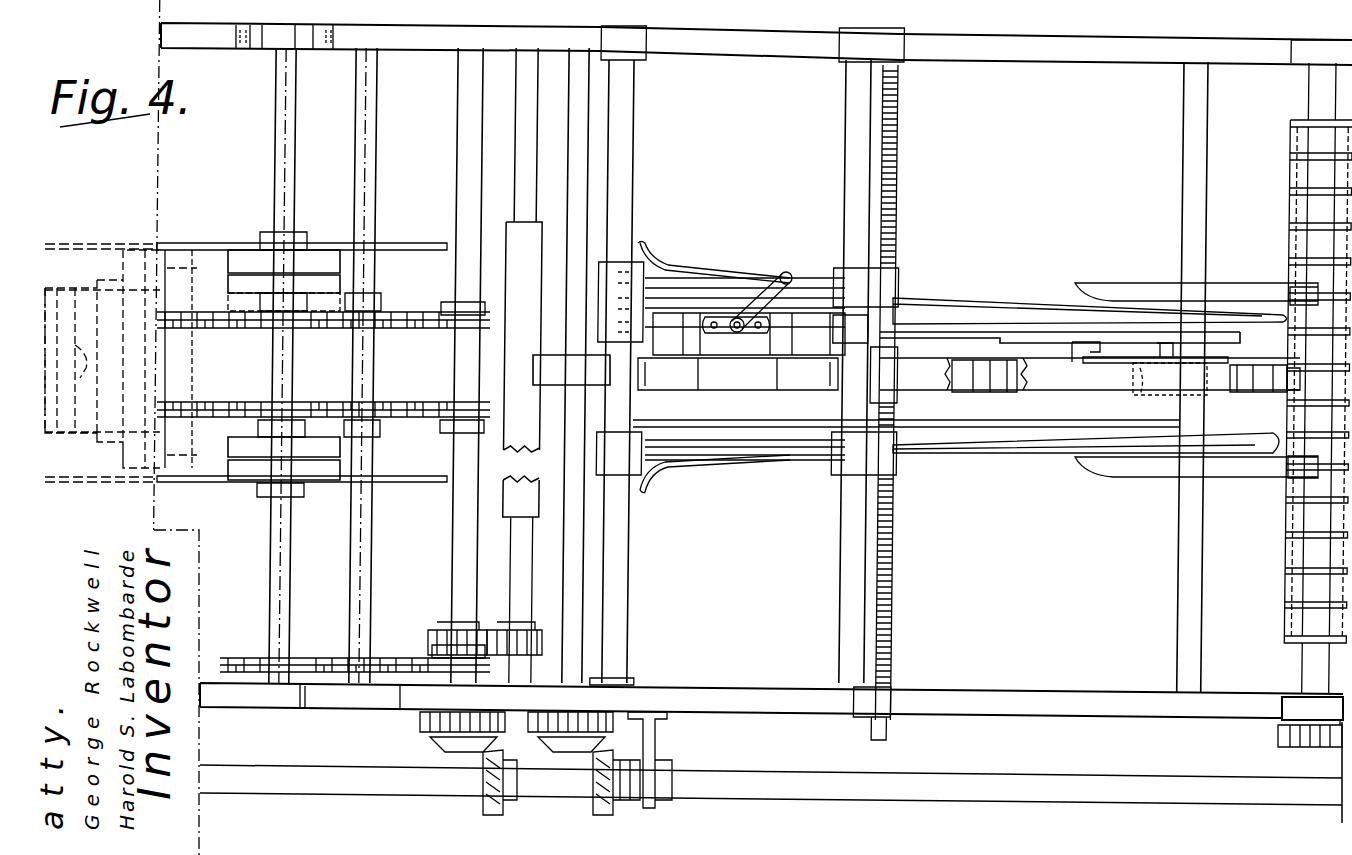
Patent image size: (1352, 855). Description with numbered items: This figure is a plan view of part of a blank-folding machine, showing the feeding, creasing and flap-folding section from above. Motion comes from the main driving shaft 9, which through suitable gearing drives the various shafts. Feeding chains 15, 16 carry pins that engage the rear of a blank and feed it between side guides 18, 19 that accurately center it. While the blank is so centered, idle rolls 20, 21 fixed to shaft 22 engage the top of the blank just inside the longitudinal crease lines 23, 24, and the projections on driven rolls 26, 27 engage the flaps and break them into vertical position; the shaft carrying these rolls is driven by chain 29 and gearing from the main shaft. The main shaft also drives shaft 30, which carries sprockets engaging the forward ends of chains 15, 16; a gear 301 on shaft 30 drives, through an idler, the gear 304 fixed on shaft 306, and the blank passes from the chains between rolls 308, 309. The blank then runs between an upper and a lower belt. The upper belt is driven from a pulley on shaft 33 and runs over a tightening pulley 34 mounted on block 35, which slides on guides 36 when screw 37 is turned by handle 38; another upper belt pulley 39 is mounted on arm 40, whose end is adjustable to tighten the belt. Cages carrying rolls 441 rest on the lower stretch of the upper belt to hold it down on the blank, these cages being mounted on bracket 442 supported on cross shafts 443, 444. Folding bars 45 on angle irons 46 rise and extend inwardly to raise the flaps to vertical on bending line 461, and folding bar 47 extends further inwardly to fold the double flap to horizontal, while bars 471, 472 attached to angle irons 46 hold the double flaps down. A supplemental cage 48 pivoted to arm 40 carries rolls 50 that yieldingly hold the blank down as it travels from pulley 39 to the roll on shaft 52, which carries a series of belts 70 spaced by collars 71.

The main driving shaft 9 is at (922, 782).
The chain 15 is at (395, 404).
The chain 16 is at (400, 330).
The side guide 18 is at (394, 486).
The side guide 19 is at (393, 248).
The idle roll 20 is at (310, 450).
The idle roll 21 is at (315, 290).
The shaft 22 is at (288, 170).
The longitudinal crease line 23 is at (228, 268).
The longitudinal crease line 24 is at (228, 466).
The driven roll 26 is at (246, 478).
The driven roll 27 is at (240, 255).
The chain 29 is at (383, 658).
The shaft 30 is at (450, 554).
The shaft 33 is at (582, 600).
The tightening pulley 34 is at (768, 368).
The block 35 is at (760, 345).
The guides 36 is at (716, 328).
The screw 37 is at (735, 317).
The handle 38 is at (786, 272).
The upper belt pulley 39 is at (1150, 382).
The arm 40 is at (1118, 366).
The folding bar 45 is at (680, 272).
The angle iron 46 is at (902, 305).
The folding bar 47 is at (228, 300).
The supplemental cage 48 is at (1260, 392).
The roll 50 is at (1282, 376).
The shaft 52 is at (1312, 668).
The belt 70 is at (1305, 585).
The collar 71 is at (1294, 536).
The gear 301 is at (438, 632).
The gear 304 is at (544, 650).
The shaft 306 is at (518, 577).
The roll 308 is at (524, 504).
The roll 309 is at (512, 462).
The roll 441 is at (968, 385).
The bracket 442 is at (985, 328).
The cross shaft 443 is at (862, 156).
The cross shaft 444 is at (628, 166).
The bending line 461 is at (197, 432).
The bar 471 is at (1135, 472).
The bar 472 is at (1116, 292).